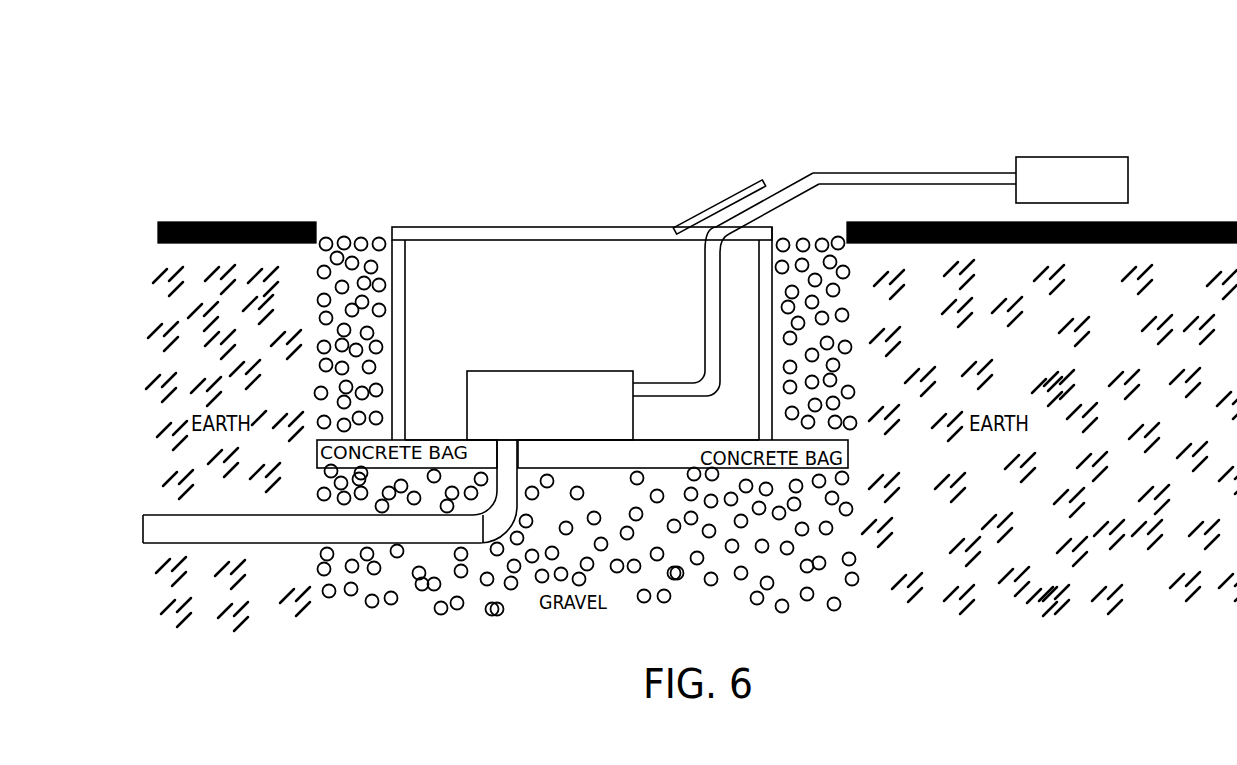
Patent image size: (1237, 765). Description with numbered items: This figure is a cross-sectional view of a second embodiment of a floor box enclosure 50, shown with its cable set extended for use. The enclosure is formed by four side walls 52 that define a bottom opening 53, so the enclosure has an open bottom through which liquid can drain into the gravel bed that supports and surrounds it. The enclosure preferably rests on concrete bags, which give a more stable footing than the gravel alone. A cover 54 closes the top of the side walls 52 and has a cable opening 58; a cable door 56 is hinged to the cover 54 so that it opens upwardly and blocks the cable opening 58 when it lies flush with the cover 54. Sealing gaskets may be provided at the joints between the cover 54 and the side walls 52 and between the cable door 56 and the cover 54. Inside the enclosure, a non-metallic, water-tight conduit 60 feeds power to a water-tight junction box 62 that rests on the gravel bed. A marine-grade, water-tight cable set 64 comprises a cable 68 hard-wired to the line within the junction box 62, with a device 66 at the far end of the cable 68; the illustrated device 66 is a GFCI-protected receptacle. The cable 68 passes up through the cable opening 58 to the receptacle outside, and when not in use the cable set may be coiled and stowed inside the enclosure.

The floor box enclosure 50 is at (485, 200).
The side walls 52 is at (407, 272).
The bottom opening 53 is at (683, 440).
The cover 54 is at (427, 227).
The cable door 56 is at (723, 200).
The cable opening 58 is at (776, 229).
The non-metallic, water-tight conduit 60 is at (273, 547).
The water-tight junction box 62 is at (548, 370).
The marine-grade, water-tight cable set 64 is at (912, 149).
The device 66 is at (1103, 157).
The cable 68 is at (705, 322).